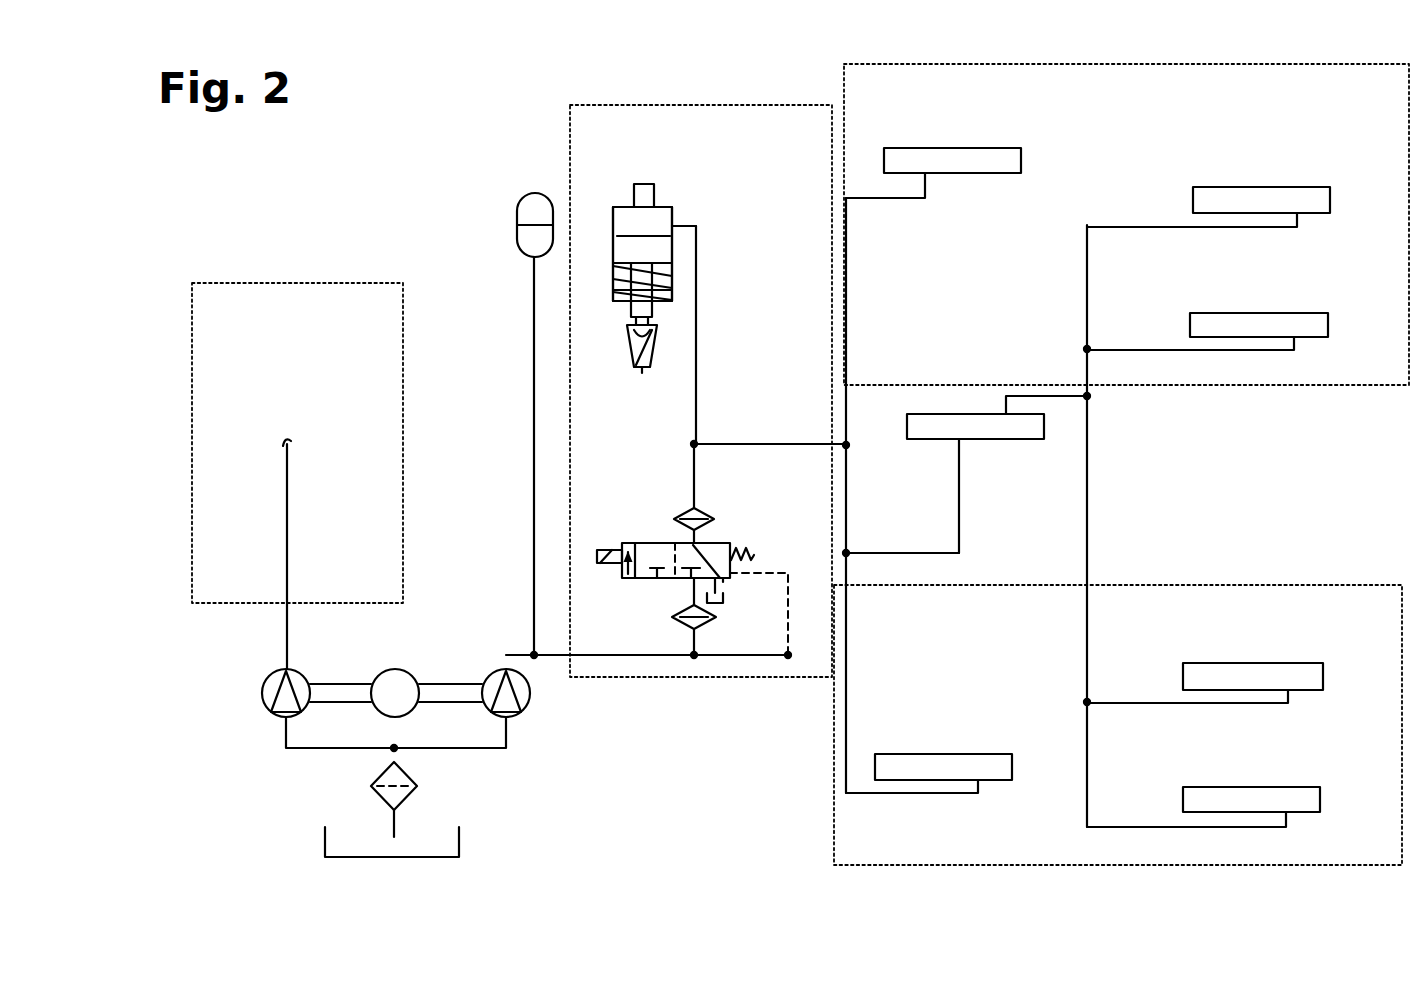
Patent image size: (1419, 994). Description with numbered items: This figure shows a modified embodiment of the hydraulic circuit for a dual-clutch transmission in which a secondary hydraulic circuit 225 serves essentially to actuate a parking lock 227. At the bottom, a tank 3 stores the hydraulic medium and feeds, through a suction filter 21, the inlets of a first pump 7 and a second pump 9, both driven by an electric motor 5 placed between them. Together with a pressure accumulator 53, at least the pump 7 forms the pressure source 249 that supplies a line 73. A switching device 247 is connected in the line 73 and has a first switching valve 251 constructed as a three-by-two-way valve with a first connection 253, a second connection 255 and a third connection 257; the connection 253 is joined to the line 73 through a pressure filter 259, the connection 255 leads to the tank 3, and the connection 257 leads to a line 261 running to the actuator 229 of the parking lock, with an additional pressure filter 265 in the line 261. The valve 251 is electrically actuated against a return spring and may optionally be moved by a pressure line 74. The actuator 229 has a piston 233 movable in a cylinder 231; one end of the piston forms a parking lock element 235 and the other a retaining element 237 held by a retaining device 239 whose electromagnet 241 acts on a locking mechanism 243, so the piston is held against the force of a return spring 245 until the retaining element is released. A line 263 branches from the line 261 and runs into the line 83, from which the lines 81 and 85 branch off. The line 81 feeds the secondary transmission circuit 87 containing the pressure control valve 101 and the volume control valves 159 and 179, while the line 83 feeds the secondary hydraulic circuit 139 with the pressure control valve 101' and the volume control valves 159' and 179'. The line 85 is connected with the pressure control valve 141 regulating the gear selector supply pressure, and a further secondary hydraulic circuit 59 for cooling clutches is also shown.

The tank 3 is at (460, 840).
The electric motor 5 is at (398, 678).
The first pump 7 is at (512, 719).
The second pump 9 is at (278, 719).
The suction filter 21 is at (410, 795).
The pressure accumulator 53 is at (516, 212).
The secondary hydraulic circuit 59 is at (282, 281).
The line 73 is at (578, 660).
The pressure line 74 is at (788, 572).
The line 81 is at (848, 297).
The line 83 is at (850, 600).
The line 85 is at (928, 551).
The secondary transmission circuit 87 is at (1240, 387).
The pressure control valve 101 is at (937, 140).
The pressure control valve 101' is at (935, 741).
The secondary hydraulic circuit 139 is at (1230, 583).
The pressure control valve 141 is at (950, 398).
The volume control valve 159 is at (1224, 175).
The volume control valve 159' is at (1222, 651).
The volume control valve 179 is at (1213, 298).
The volume control valve 179' is at (1212, 774).
The secondary hydraulic circuit 225 is at (568, 113).
The parking lock 227 is at (689, 244).
The actuator 229 is at (596, 172).
The cylinder 231 is at (672, 215).
The piston 233 is at (660, 253).
The parking lock element 235 is at (644, 200).
The retaining element 237 is at (634, 330).
The retaining device 239 is at (669, 330).
The electromagnet 241 is at (643, 372).
The locking mechanism 243 is at (628, 333).
The return spring 245 is at (620, 290).
The switching device 247 is at (583, 572).
The pressure source 249 is at (556, 742).
The first switching valve 251 is at (640, 538).
The first connection 253 is at (690, 583).
The second connection 255 is at (724, 580).
The third connection 257 is at (700, 545).
The pressure filter 259 is at (677, 625).
The line 261 is at (698, 366).
The line 263 is at (826, 444).
The pressure filter 265 is at (705, 512).